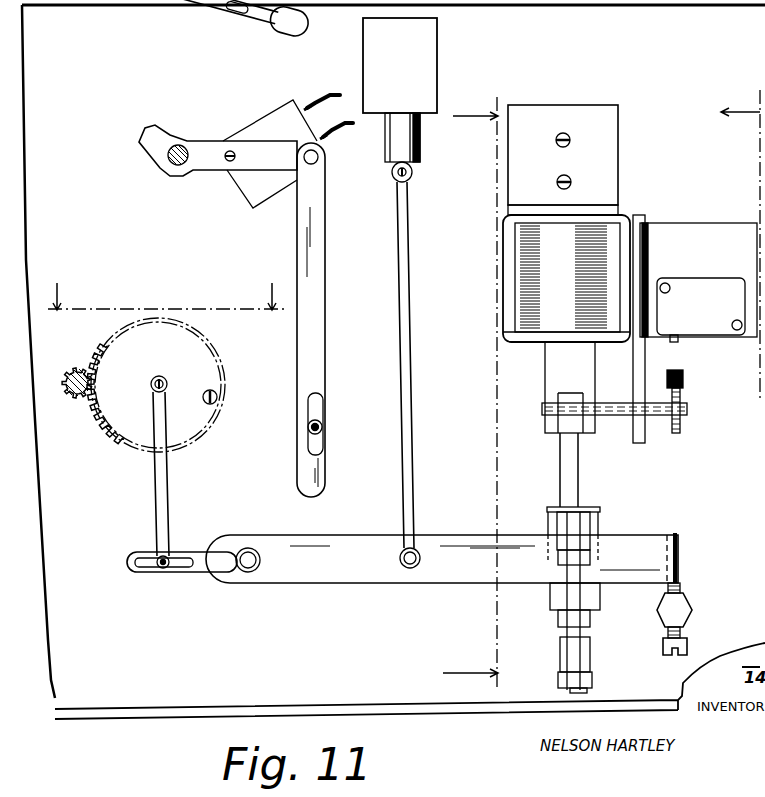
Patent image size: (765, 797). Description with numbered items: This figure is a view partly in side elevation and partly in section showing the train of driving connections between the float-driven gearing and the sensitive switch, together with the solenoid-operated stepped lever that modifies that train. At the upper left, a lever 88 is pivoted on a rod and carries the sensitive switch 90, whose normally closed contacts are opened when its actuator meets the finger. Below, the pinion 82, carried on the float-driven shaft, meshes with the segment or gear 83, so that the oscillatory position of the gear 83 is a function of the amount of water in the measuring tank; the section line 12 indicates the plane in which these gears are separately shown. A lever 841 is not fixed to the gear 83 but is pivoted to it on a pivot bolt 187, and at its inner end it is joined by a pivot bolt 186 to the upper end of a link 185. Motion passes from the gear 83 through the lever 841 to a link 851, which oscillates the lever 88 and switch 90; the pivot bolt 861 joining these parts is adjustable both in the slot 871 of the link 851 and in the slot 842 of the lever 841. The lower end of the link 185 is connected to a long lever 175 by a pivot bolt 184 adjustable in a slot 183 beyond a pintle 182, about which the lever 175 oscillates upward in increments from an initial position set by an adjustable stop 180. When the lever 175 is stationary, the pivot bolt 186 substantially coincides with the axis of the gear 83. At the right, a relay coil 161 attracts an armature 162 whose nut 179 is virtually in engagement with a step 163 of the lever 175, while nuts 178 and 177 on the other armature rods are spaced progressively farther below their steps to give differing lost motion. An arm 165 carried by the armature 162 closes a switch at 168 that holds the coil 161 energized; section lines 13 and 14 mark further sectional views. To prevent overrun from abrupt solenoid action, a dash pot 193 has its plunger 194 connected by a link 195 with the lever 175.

The section line 12- 12 is at (166, 287).
The section line 13- 13 is at (465, 397).
The section line 14 is at (740, 244).
The pinion 82 is at (79, 397).
The gear 83 is at (133, 425).
The lever 88 is at (252, 158).
The sensitive switch 90 is at (268, 118).
The relay coil 161 is at (566, 223).
The armature 162 is at (568, 478).
The step 163 is at (597, 508).
The arm 165 is at (690, 410).
The switch 168 is at (714, 318).
The lever 175 is at (437, 548).
The nut 177 is at (562, 657).
The nut 178 is at (570, 600).
The nut 179 is at (573, 533).
The adjustable stop 180 is at (683, 585).
The pintle 182 is at (248, 566).
The slot 183 is at (142, 565).
The pivot bolt 184 is at (166, 556).
The link 185 is at (163, 503).
The pivot bolt 186 is at (161, 378).
The pivot bolt 187 is at (218, 392).
The dash pot 193 is at (417, 82).
The plunger 194 is at (400, 143).
The link 195 is at (408, 297).
The lever 841 is at (252, 406).
The slot 842 is at (343, 447).
The link 851 is at (320, 325).
The pivot bolt 861 is at (311, 432).
The slot 871 is at (320, 405).